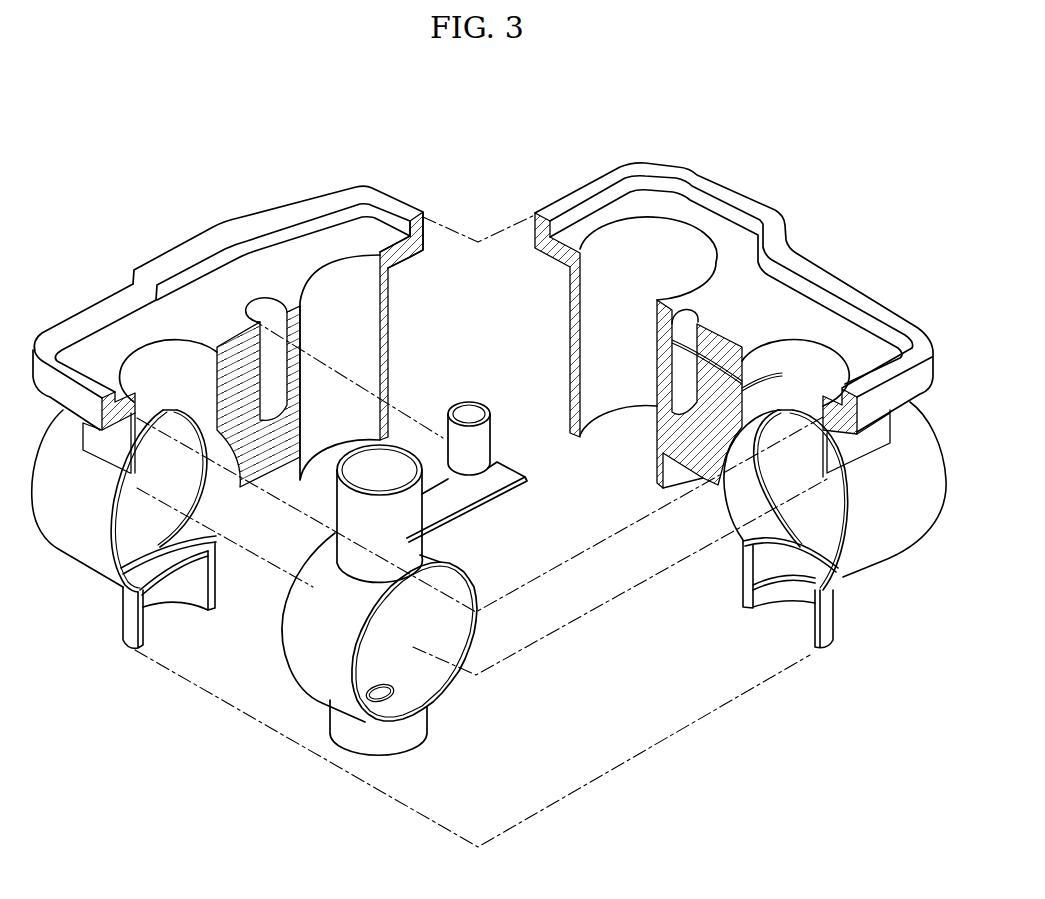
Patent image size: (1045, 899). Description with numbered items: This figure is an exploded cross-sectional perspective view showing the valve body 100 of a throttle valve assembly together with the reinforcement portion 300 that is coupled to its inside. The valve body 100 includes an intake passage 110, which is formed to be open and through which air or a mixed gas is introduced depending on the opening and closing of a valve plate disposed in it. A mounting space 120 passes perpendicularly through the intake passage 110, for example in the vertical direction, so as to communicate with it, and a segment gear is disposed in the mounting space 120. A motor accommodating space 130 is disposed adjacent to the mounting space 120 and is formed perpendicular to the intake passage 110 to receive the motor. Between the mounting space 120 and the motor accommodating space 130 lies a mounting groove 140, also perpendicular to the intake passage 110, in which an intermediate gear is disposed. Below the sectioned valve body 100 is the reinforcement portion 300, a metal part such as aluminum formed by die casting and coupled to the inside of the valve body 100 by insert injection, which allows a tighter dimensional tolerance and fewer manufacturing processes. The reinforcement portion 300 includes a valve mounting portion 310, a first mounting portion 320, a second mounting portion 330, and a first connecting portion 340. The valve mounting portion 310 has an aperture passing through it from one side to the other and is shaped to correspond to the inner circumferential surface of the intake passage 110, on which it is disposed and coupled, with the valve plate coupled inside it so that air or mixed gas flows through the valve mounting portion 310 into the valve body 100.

The valve body 100 is at (481, 299).
The intake passage 110 is at (762, 497).
The mounting space 120 is at (160, 373).
The motor accommodating space 130 is at (621, 312).
The mounting groove 140 is at (270, 320).
The reinforcement portion 300 is at (389, 578).
The valve mounting portion 310 is at (442, 556).
The first mounting portion 320 is at (336, 522).
The second mounting portion 330 is at (490, 437).
The first connecting portion 340 is at (467, 513).